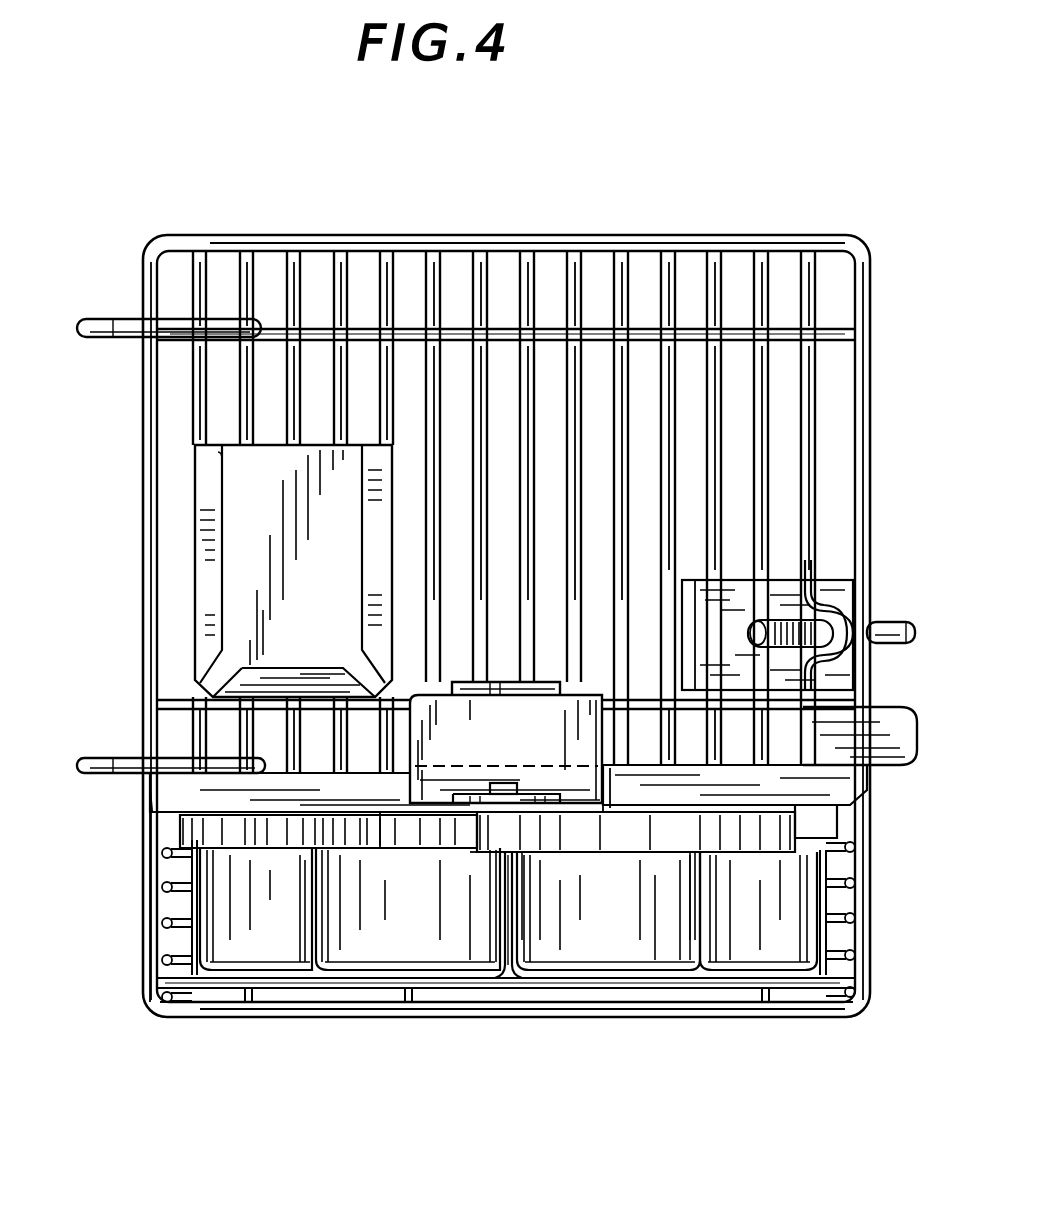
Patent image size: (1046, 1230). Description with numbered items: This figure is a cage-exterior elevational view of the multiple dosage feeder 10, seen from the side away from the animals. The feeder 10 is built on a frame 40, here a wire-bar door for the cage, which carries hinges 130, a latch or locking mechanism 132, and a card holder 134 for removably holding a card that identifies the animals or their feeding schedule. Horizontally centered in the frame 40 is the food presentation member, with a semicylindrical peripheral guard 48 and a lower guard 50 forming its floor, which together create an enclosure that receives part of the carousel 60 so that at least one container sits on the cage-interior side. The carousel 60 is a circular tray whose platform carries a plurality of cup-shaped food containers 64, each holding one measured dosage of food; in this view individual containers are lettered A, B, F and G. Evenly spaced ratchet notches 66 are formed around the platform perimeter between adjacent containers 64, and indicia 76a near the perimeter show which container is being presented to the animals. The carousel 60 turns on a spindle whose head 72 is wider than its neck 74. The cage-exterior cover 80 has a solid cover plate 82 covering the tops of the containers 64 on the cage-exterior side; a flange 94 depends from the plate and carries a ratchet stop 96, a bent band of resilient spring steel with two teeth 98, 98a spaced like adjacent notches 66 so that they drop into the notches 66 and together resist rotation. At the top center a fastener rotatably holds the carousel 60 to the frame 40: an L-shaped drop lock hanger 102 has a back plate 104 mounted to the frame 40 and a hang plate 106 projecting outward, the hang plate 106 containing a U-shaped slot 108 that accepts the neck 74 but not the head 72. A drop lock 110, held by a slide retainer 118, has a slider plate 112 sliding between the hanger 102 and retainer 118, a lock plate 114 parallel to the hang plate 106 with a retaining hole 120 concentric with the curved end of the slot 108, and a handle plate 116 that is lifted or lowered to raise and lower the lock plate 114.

The multiple dosage feeder 10 is at (127, 834).
The frame 40 is at (868, 520).
The peripheral guard 48 is at (843, 937).
The lower guard 50 is at (725, 1017).
The food holding member 60 is at (186, 908).
The food containers 64 is at (357, 964).
The ratchet notches 66 is at (190, 874).
The head 72 is at (503, 790).
The neck 74 is at (498, 862).
The indicia 76a is at (197, 962).
The cage-exterior cover 80 is at (203, 800).
The cover plate 82 is at (860, 800).
The flange 94 is at (660, 783).
The ratchet stop 96 is at (662, 880).
The tooth 98 is at (795, 826).
The tooth 98a is at (537, 870).
The drop lock hanger 102 is at (417, 692).
The back plate 104 is at (598, 784).
The hang plate 106 is at (408, 806).
The U-shaped slot 108 is at (518, 821).
The drop lock 110 is at (545, 682).
The slider plate 112 is at (433, 806).
The lock plate 114 is at (533, 766).
The handle plate 116 is at (510, 682).
The slide retainer 118 is at (594, 705).
The retaining hole 120 is at (487, 845).
The hinges 130 is at (92, 318).
The latch or locking mechanism 132 is at (895, 622).
The card holder 134 is at (228, 602).
The bin F is at (196, 967).
The bin G is at (433, 1020).
The bin A is at (455, 1047).
The bin B is at (800, 992).